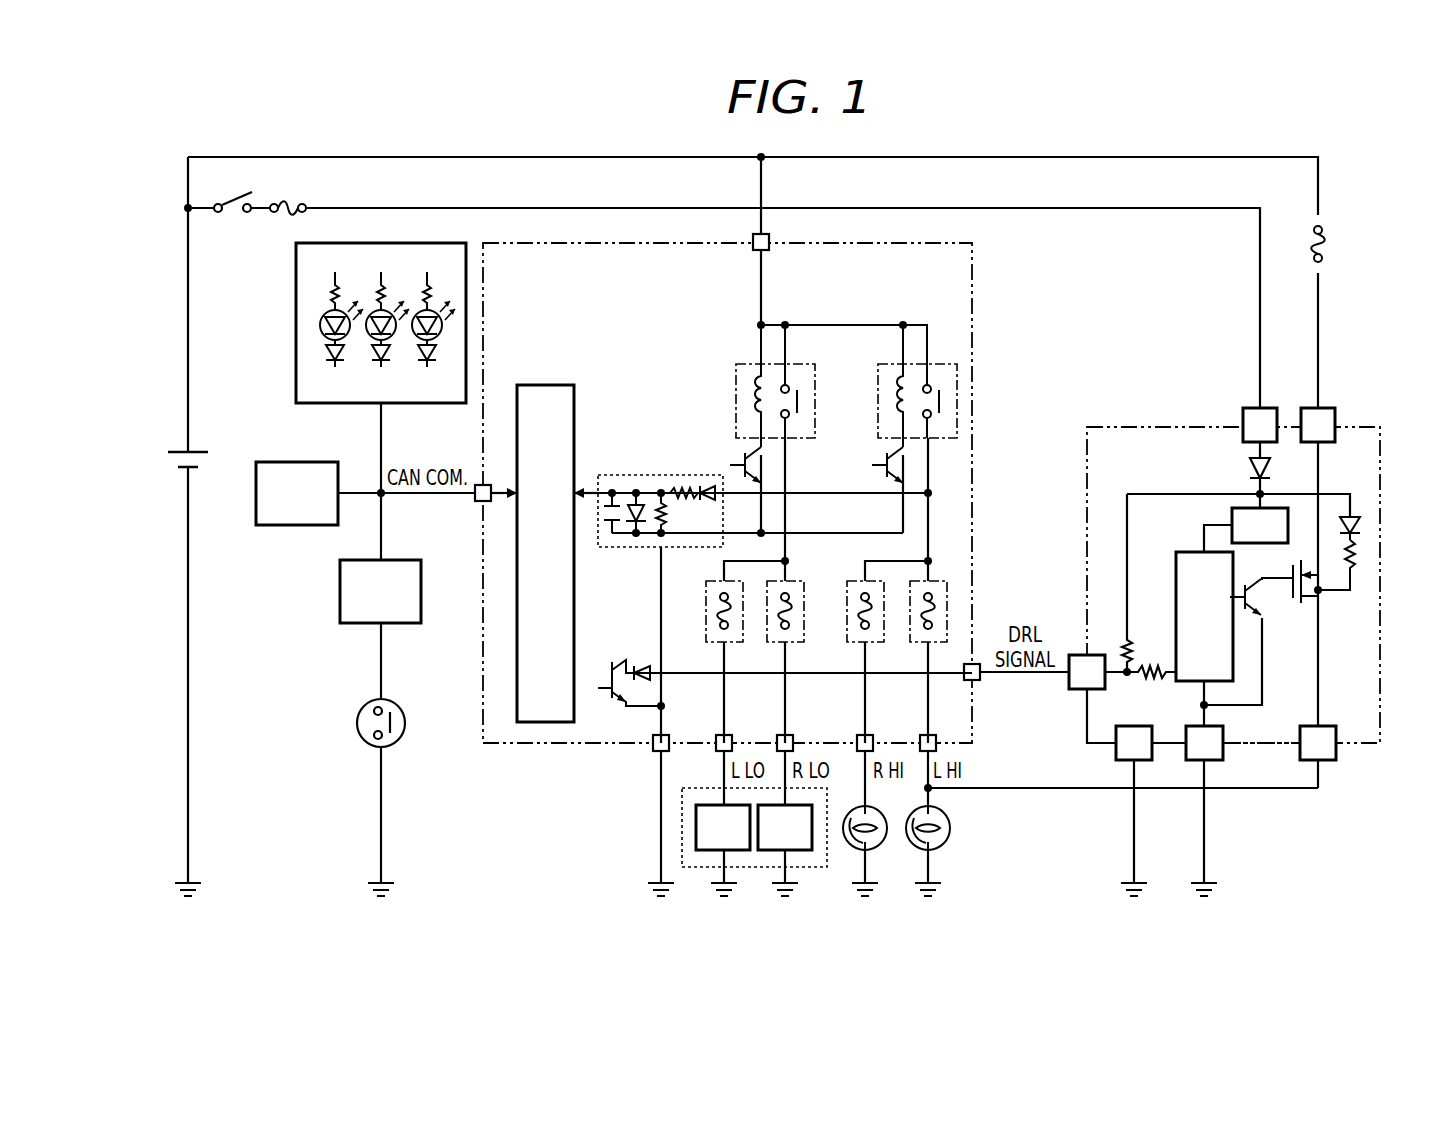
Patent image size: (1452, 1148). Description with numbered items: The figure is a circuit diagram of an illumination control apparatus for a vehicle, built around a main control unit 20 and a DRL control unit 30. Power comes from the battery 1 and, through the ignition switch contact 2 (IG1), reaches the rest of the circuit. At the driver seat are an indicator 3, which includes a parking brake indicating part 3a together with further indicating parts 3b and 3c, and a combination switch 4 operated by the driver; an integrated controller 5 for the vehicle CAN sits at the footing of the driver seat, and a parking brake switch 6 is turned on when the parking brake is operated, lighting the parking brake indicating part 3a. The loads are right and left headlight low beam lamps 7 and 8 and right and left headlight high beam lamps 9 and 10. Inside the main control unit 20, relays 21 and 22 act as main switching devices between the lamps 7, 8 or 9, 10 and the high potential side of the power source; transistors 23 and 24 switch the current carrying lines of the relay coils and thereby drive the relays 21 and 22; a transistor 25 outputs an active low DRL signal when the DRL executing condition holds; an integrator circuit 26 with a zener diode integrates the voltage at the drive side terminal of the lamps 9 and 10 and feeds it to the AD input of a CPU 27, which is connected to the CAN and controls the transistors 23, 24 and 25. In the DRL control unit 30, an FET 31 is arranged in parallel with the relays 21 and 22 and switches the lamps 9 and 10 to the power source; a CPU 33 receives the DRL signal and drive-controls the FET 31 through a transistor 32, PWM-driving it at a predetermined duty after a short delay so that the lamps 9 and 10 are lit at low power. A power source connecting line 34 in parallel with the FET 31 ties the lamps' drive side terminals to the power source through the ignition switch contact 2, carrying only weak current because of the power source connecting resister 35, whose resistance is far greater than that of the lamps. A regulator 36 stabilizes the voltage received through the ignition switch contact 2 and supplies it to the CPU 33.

The battery 1 is at (196, 450).
The ignition switch contact 2 is at (236, 200).
The indicator 3 is at (361, 348).
The parking brake indicating part 3a is at (427, 405).
The DRL indicator 3b is at (372, 405).
The low beam indicator 3c is at (335, 405).
The combination switch 4 is at (284, 527).
The integrated controller for CAN 5 is at (396, 560).
The parking brake switch 6 is at (399, 706).
The headlight low beam lamp 7 is at (704, 852).
The headlight low beam lamp 8 is at (766, 852).
The headlight high beam lamp 9 is at (851, 850).
The headlight high beam lamp 10 is at (912, 850).
The main control unit 20 is at (974, 277).
The relay 21 is at (736, 388).
The relay 22 is at (878, 388).
The transistor 23 is at (735, 462).
The transistor 24 is at (877, 462).
The transistor 25 is at (620, 672).
The integrator circuit 26 is at (650, 475).
The CPU 27 is at (549, 385).
The DRL control unit 30 is at (1152, 427).
The FET 31 is at (1306, 606).
The transistor 32 is at (1264, 608).
The CPU 33 is at (1176, 598).
The power source connecting line 34 is at (1356, 580).
The power source connecting resister 35 is at (1356, 550).
The regulator 36 is at (1232, 522).